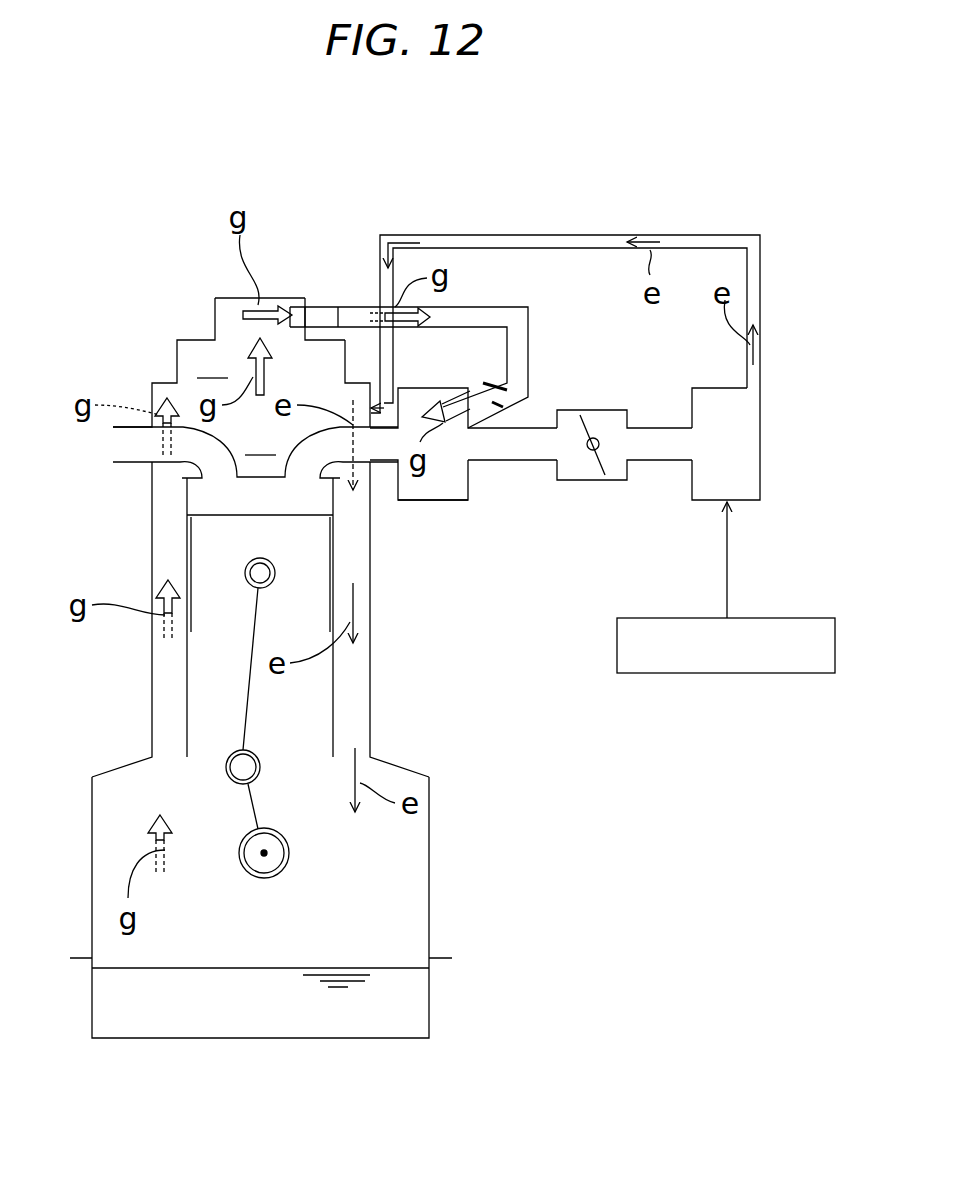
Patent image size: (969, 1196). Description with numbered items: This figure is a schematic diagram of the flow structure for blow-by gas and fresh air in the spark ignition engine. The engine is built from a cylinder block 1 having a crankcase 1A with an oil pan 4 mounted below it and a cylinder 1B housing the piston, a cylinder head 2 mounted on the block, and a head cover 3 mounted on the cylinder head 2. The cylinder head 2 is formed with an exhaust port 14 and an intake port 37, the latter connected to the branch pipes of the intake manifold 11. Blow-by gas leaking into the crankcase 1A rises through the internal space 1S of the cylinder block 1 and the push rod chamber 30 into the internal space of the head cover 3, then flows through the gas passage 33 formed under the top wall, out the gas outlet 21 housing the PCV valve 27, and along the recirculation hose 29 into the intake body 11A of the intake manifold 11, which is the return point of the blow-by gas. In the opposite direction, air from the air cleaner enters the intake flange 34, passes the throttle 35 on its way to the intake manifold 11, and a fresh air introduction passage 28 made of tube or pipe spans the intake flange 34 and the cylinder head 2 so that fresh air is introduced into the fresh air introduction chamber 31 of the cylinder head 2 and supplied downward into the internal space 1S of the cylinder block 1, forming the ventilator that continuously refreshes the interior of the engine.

The cylinder block 1 is at (429, 840).
The crankcase 1A is at (429, 927).
The cylinder 1B is at (370, 688).
The internal space of the cylinder block 1S is at (133, 790).
The cylinder head 2 is at (152, 393).
The head cover 3 is at (177, 352).
The oil pan 4 is at (429, 1003).
The intake manifold 11 is at (470, 497).
The intake body 11A is at (430, 487).
The exhaust port 14 is at (195, 432).
The gas outlet 21 is at (318, 302).
The PCV valve 27 is at (323, 312).
The fresh air introduction passage 28 is at (565, 237).
The recirculation hose 29 is at (530, 322).
The push rod chamber 30 is at (160, 470).
The fresh air introduction chamber 31 is at (349, 382).
The gas passage 33 is at (230, 303).
The intake flange 34 is at (715, 390).
The throttle 35 is at (600, 410).
The intake port 37 is at (335, 432).